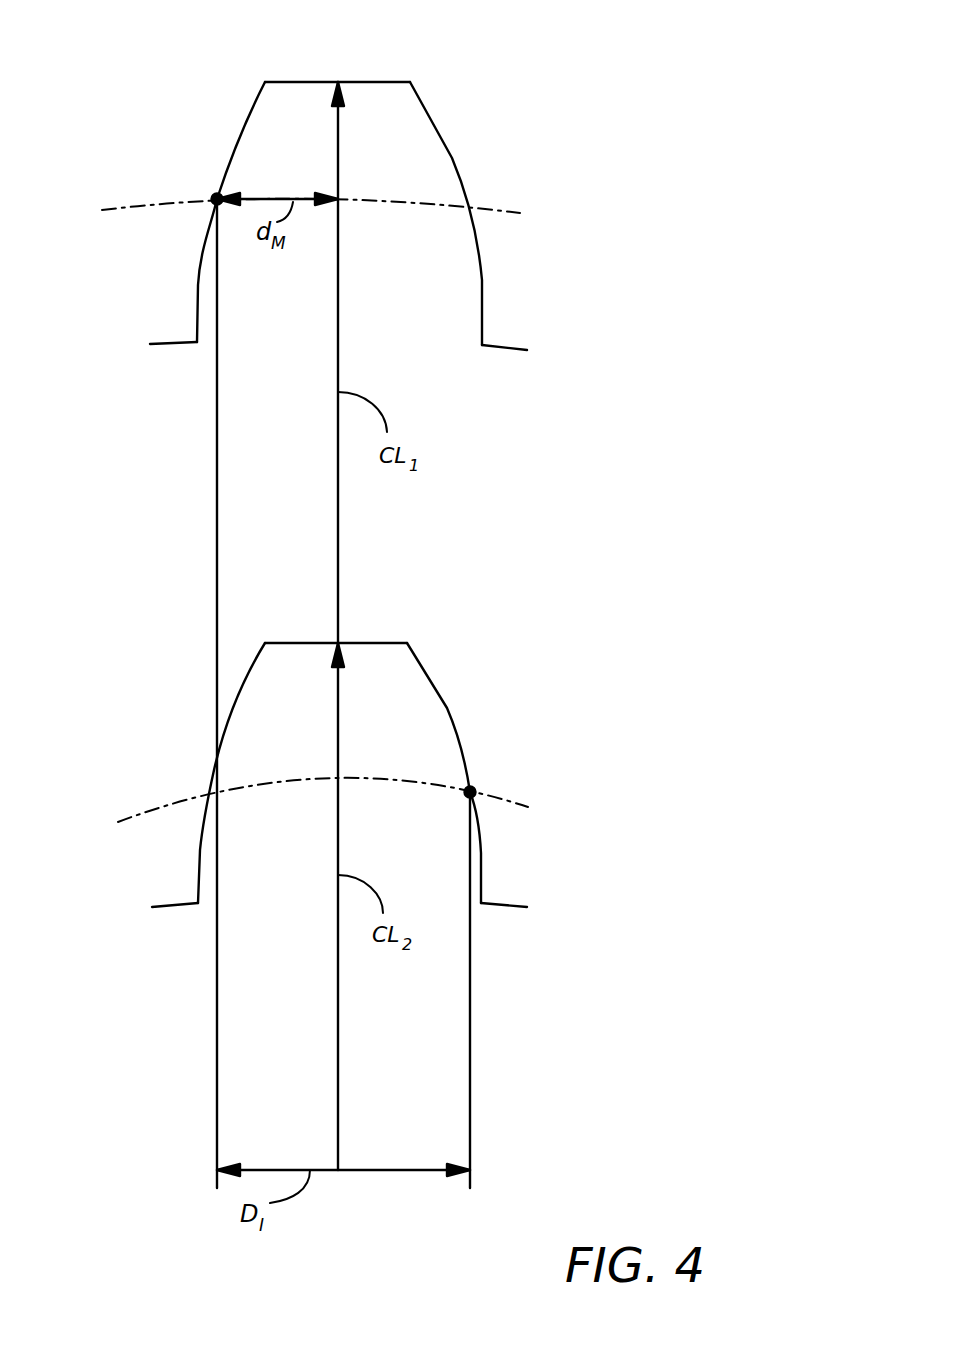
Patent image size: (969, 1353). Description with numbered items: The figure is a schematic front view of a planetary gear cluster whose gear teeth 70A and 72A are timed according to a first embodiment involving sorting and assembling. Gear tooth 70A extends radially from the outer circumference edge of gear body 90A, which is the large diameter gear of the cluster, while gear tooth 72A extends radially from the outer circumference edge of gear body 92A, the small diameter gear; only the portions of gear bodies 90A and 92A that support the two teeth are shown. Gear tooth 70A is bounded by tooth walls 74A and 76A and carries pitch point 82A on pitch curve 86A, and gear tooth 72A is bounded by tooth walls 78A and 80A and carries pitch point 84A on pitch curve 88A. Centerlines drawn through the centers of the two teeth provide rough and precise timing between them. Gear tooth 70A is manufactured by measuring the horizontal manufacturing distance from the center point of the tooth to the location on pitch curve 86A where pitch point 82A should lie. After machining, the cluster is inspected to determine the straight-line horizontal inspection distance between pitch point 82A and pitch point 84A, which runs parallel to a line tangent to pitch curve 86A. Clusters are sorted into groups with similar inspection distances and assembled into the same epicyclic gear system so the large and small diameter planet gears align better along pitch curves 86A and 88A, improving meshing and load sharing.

The gear tooth 70A is at (341, 197).
The gear tooth 72A is at (336, 757).
The tooth wall 74A is at (197, 275).
The tooth wall 76A is at (452, 161).
The tooth wall 78A is at (197, 850).
The tooth wall 80A is at (448, 708).
The pitch point 82A is at (217, 199).
The pitch point 84A is at (470, 792).
The pitch curve 86A is at (148, 202).
The pitch curve 88A is at (165, 805).
The gear body 90A is at (498, 345).
The gear body 92A is at (503, 903).